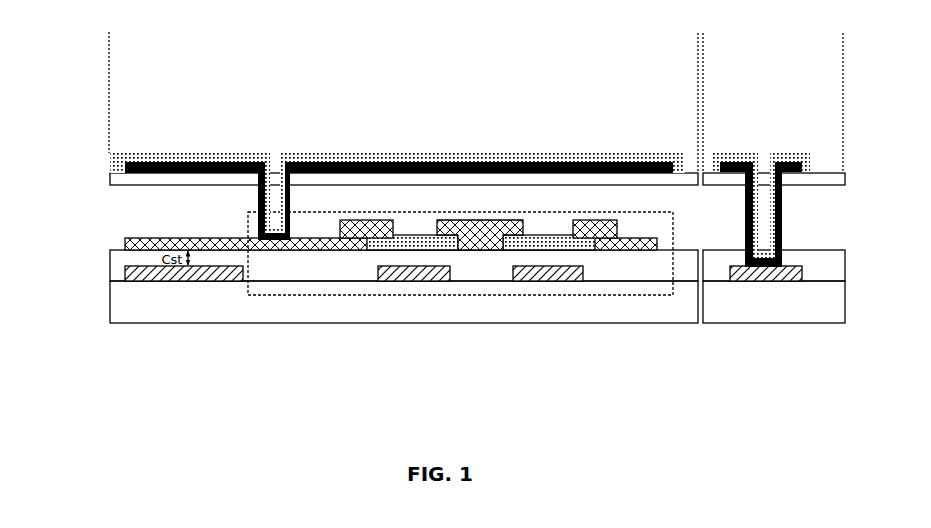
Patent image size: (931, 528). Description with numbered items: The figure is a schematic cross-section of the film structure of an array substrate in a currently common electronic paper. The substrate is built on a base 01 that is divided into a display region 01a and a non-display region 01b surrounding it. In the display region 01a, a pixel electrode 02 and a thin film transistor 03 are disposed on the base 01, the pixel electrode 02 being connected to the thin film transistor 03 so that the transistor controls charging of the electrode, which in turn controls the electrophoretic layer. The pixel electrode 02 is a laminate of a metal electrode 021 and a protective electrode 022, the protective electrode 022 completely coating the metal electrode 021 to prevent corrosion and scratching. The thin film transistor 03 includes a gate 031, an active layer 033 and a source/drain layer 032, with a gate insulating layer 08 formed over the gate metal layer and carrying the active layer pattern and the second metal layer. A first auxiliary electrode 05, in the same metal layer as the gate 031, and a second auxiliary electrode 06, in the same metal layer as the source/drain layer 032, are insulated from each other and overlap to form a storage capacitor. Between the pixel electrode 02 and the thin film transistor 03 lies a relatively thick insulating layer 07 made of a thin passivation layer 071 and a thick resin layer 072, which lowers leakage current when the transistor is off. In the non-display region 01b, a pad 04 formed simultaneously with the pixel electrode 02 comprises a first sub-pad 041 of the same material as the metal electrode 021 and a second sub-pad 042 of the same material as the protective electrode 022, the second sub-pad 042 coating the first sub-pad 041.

The base 01 is at (145, 302).
The display region 01a is at (697, 70).
The non-display region 01b is at (704, 70).
The pixel electrode 02 is at (397, 164).
The metal electrode 021 is at (178, 166).
The protective electrode 022 is at (168, 113).
The thin film transistor 03 is at (460, 276).
The gate 031 is at (418, 282).
The source/drain layer 032 is at (480, 245).
The active layer 033 is at (412, 242).
The pad 04 is at (762, 185).
The first sub-pad 041 is at (741, 166).
The second sub-pad 042 is at (728, 114).
The first auxiliary electrode 05 is at (178, 282).
The second auxiliary electrode 06 is at (228, 251).
The insulating layer 07 is at (436, 211).
The passivation layer 071 is at (145, 182).
The resin layer 072 is at (145, 218).
The gate insulating layer 08 is at (130, 260).